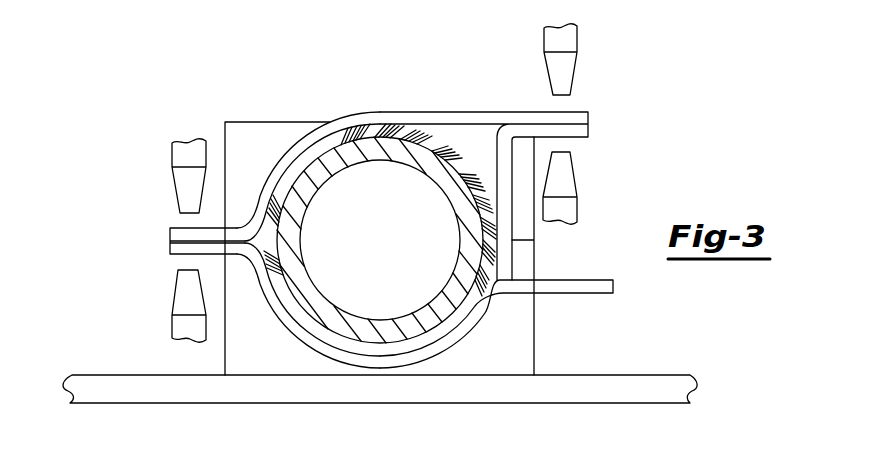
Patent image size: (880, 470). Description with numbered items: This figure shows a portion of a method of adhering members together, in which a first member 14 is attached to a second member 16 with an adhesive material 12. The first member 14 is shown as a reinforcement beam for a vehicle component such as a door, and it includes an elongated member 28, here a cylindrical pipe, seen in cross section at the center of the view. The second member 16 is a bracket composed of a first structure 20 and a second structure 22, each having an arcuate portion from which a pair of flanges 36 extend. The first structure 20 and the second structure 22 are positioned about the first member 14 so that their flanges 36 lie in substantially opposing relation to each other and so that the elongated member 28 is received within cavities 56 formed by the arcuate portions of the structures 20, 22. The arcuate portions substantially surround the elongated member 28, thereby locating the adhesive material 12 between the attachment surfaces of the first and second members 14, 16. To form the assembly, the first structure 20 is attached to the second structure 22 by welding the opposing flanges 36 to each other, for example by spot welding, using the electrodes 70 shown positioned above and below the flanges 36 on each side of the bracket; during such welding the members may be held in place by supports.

The adhesive material 12 is at (490, 245).
The first member 14 is at (332, 157).
The second member 16 is at (257, 155).
The first structure 20 is at (399, 99).
The second structure 22 is at (472, 356).
The elongated member 28 is at (400, 333).
The flanges 36 is at (168, 250).
The cavities 56 is at (478, 150).
The electrodes 70 is at (568, 73).